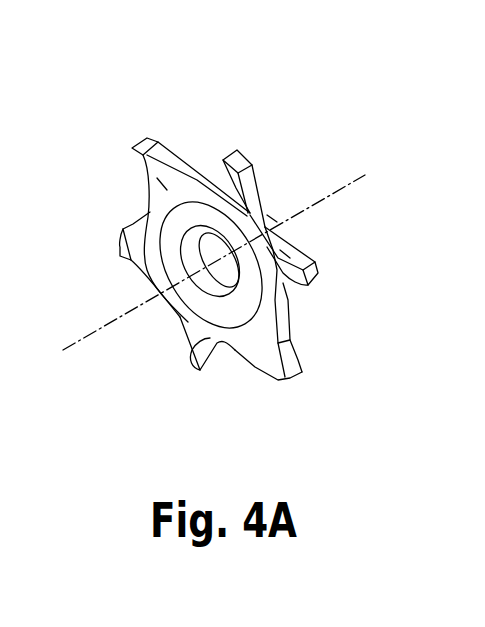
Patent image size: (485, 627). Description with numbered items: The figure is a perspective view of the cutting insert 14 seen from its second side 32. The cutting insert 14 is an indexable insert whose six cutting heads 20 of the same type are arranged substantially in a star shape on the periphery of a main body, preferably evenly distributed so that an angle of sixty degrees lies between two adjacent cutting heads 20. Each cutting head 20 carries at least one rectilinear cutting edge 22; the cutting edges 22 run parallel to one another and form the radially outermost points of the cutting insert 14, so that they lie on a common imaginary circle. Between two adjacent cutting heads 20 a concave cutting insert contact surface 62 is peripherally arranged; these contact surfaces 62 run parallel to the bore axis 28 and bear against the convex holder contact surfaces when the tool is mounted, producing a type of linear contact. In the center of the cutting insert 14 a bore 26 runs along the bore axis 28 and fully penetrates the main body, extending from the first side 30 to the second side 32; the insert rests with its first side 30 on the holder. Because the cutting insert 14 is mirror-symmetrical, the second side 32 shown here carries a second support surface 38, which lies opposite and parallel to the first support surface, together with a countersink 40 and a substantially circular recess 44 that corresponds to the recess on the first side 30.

The cutting insert 14 is at (278, 92).
The cutting head 20 is at (302, 293).
The cutting edge 22 is at (320, 268).
The bore 26 is at (185, 320).
The bore axis 28 is at (358, 180).
The first side 30 is at (305, 352).
The second side 32 is at (187, 370).
The second support surface 38 is at (175, 218).
The countersink 40 is at (188, 257).
The recess 44 is at (147, 176).
The cutting insert contact surface 62 is at (203, 175).